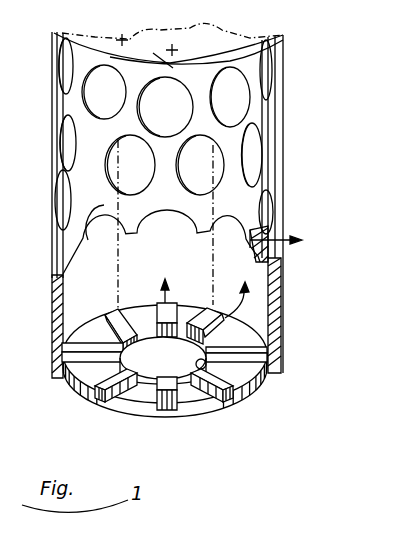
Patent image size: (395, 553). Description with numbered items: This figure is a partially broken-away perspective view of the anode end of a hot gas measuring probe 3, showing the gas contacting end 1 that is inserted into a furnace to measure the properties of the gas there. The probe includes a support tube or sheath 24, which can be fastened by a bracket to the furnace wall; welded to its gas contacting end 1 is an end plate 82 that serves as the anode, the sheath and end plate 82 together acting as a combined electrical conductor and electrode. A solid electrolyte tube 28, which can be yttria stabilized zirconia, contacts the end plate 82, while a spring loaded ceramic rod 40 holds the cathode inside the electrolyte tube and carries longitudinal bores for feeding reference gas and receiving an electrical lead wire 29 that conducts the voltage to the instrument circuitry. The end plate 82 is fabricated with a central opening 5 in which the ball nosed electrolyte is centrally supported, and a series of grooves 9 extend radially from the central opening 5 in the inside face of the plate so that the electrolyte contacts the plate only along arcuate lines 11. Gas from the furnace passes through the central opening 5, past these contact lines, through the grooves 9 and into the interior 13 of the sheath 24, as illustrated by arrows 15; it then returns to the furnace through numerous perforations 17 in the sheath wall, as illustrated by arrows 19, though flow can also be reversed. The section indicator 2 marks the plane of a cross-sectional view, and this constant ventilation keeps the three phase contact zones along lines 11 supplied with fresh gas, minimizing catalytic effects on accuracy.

The gas contacting end 1 is at (66, 400).
The section line 2- 2 is at (167, 232).
The hot gas measuring probe 3 is at (322, 168).
The central opening 5 is at (188, 370).
The grooves 9 is at (240, 405).
The arcuate lines 11 is at (164, 332).
The interior of the sheath 13 is at (75, 293).
The arrows 15 is at (171, 291).
The perforations 17 is at (232, 103).
The arrows 19 is at (283, 252).
The support tube or sheath 24 is at (272, 233).
The solid electrolyte tube 28 is at (116, 40).
The electrical lead wire 29 is at (180, 48).
The spring loaded ceramic rod 40 is at (164, 136).
The end plate 82 is at (200, 407).